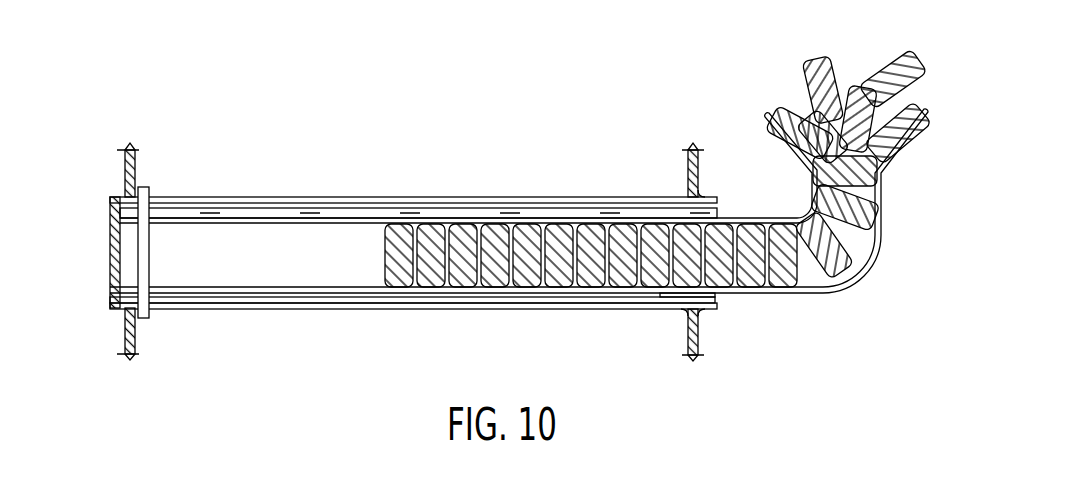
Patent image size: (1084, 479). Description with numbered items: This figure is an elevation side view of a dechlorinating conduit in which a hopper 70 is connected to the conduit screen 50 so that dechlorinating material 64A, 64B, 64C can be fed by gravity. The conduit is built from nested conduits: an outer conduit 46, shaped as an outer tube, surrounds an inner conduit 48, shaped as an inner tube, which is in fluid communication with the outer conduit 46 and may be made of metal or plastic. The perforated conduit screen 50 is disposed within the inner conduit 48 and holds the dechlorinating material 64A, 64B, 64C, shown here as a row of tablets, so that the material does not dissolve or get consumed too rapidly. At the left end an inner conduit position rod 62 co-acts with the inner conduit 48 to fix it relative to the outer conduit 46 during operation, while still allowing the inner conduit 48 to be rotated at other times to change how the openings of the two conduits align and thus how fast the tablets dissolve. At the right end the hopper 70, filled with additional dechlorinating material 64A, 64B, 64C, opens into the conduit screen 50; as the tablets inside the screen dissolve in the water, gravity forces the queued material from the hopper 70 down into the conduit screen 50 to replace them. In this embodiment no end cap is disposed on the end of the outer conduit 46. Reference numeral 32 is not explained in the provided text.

The support strut 32 is at (698, 177).
The outer conduit 46 is at (633, 197).
The inner conduit 48 is at (365, 208).
The conduit screen 50 is at (507, 220).
The inner conduit position rod 62 is at (137, 250).
The dechlorinating material 64A is at (387, 288).
The dechlorinating material 64B is at (440, 289).
The dechlorinating material 64C is at (476, 288).
The hopper 70 is at (882, 222).